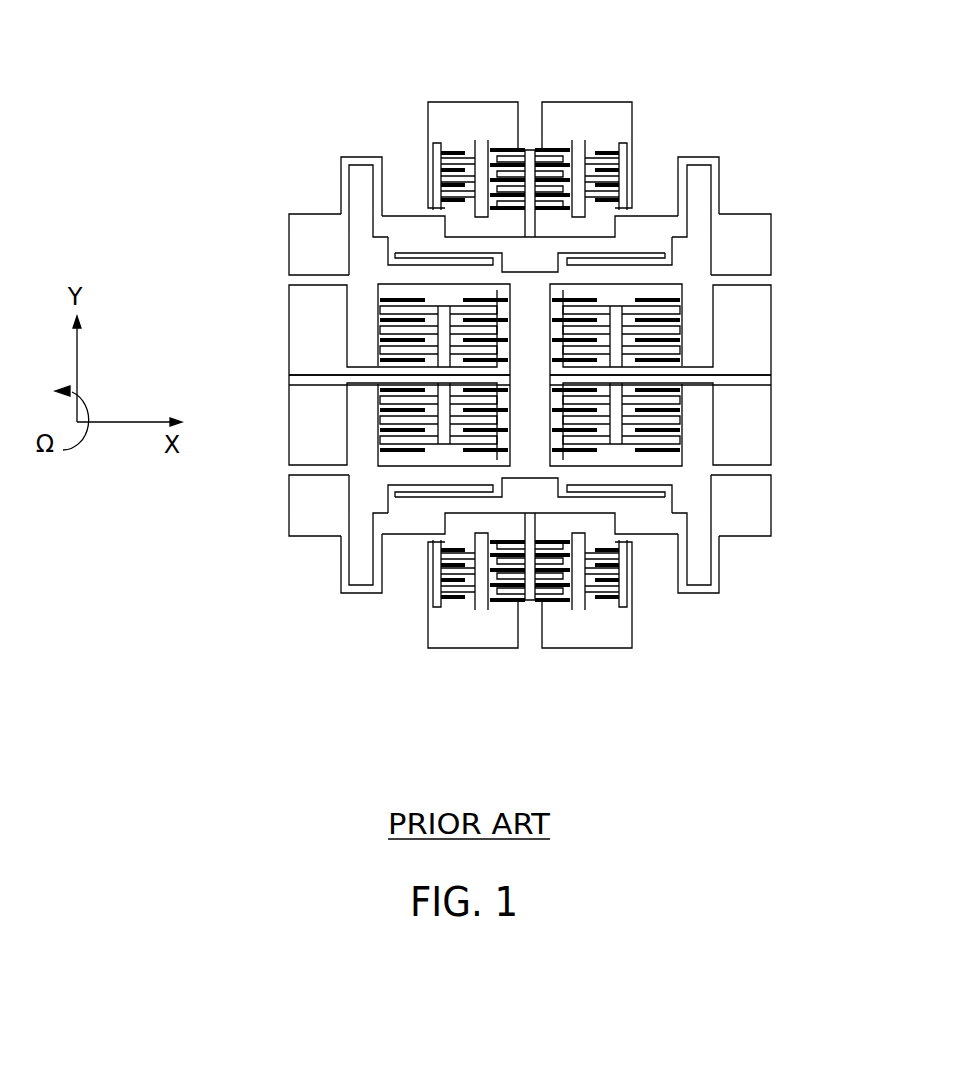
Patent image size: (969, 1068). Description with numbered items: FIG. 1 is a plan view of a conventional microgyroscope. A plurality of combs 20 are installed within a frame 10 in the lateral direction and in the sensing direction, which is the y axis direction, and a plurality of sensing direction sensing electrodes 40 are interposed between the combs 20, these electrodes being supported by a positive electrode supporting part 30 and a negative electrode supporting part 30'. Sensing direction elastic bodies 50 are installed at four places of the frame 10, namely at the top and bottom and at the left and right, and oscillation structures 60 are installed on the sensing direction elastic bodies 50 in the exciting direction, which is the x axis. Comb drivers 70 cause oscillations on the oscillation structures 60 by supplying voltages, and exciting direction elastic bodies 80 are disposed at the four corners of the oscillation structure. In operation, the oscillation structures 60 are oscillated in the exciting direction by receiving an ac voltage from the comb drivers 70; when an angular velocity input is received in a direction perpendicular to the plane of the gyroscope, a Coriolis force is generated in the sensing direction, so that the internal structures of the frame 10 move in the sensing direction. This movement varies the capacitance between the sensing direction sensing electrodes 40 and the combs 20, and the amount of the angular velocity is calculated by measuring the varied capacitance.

The frame 10 is at (627, 280).
The combs 20 is at (390, 423).
The positive electrode supporting part 30 is at (520, 339).
The negative electrode supporting part 30' is at (518, 440).
The sensing direction sensing electrodes 40 is at (447, 305).
The sensing direction elastic bodies 50 is at (432, 253).
The oscillation structures 60 is at (528, 230).
The comb drivers 70 is at (458, 102).
The exciting direction elastic bodies 80 is at (688, 238).